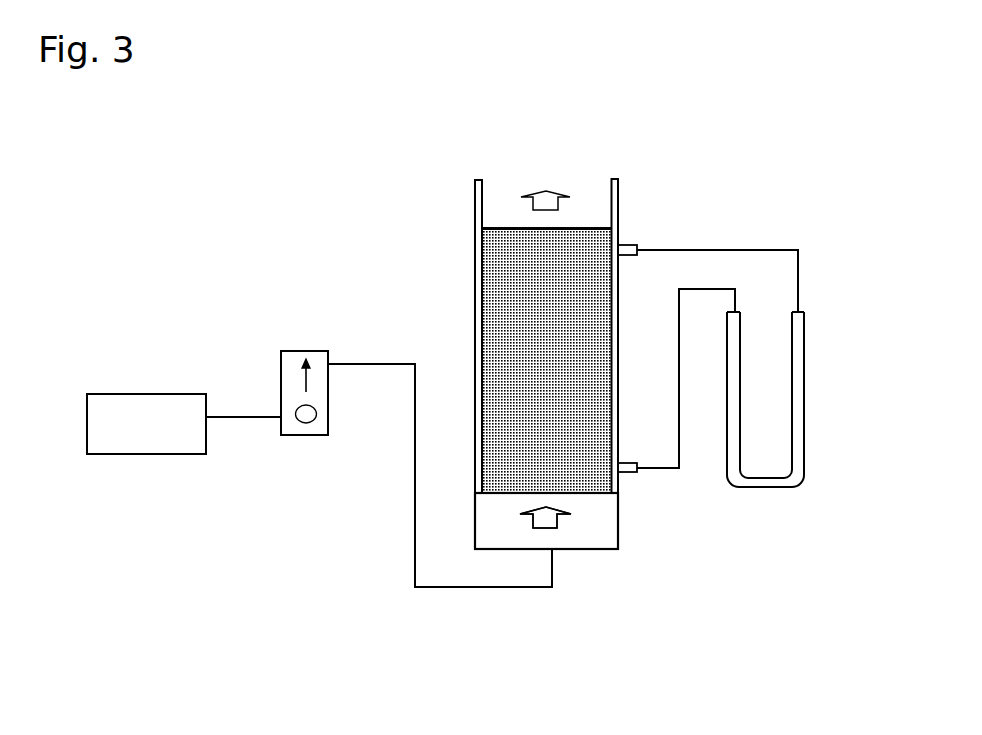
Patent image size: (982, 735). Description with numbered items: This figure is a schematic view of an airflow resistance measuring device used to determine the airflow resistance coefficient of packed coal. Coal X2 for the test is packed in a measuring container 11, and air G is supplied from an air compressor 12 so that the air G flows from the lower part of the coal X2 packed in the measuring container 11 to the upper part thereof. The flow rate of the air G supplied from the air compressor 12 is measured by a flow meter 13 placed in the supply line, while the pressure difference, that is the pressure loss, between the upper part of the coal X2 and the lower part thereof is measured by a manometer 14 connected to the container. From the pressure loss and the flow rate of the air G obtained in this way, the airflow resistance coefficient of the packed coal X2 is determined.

The measuring container 11 is at (474, 204).
The coal X2 is at (490, 332).
The air G is at (557, 522).
The air compressor 12 is at (117, 394).
The flow meter 13 is at (281, 358).
The manometer 14 is at (804, 352).